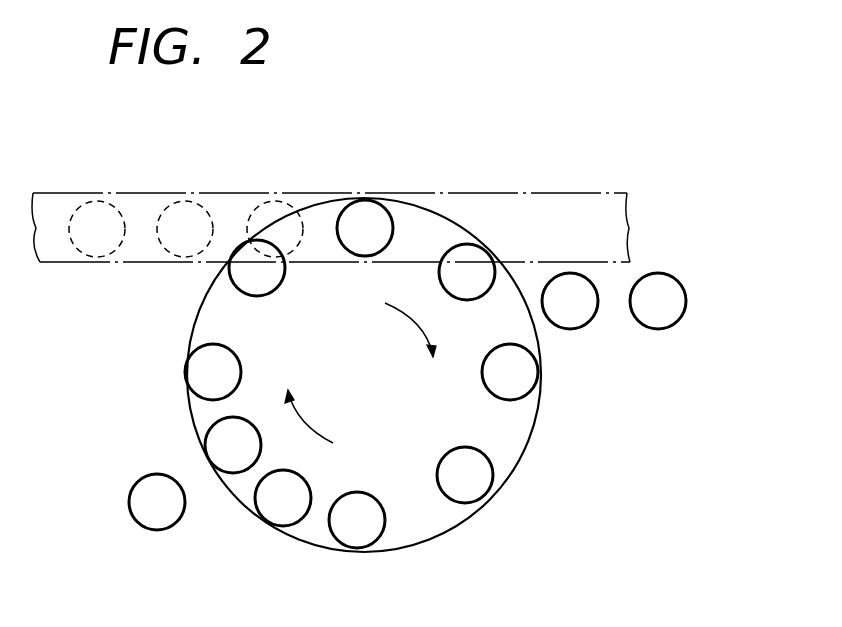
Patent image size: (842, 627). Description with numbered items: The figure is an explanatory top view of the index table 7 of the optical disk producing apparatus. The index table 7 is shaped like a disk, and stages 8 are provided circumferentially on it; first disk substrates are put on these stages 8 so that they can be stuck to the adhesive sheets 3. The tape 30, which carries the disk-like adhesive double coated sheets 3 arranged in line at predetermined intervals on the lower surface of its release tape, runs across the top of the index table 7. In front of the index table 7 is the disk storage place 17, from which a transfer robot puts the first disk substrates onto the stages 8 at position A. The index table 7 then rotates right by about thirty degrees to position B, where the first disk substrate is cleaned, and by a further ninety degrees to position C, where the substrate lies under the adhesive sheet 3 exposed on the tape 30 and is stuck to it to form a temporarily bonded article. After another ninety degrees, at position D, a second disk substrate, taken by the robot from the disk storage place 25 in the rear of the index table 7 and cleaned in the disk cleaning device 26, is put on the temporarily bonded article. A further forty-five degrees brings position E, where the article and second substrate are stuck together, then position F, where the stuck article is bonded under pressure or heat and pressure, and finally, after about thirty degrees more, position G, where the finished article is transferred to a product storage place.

The adhesive double coated sheet 3 is at (107, 200).
The tape 30 is at (557, 192).
The index table 7 is at (406, 534).
The stage 8 is at (240, 283).
The disk storage place 17 is at (147, 520).
The disk storage place 25 is at (680, 318).
The disk cleaning device 26 is at (585, 315).
The position A is at (209, 421).
The position B is at (201, 341).
The position C is at (396, 222).
The position D is at (501, 401).
The position E is at (449, 502).
The position F is at (334, 526).
The position G is at (256, 491).